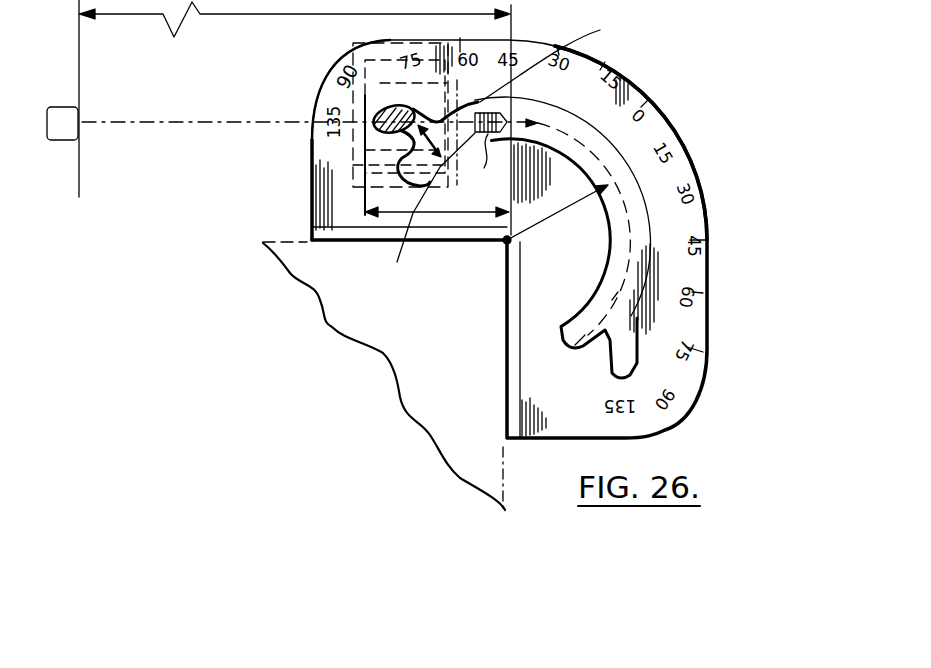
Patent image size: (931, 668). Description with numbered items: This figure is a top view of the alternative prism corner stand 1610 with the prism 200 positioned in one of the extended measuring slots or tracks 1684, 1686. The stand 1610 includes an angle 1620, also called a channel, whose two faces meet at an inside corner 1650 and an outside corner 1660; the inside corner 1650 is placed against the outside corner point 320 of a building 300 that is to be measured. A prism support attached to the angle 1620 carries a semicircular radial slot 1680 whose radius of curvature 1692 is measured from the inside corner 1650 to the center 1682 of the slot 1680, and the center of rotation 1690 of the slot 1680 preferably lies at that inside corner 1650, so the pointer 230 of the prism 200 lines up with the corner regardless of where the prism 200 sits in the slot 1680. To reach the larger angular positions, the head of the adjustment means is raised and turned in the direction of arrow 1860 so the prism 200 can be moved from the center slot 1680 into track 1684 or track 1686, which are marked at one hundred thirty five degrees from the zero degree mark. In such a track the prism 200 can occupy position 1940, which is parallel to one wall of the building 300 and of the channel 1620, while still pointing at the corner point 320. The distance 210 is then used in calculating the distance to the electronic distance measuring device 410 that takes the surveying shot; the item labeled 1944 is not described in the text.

The alternative prism corner stand 1610 is at (782, 71).
The angle 1620 is at (507, 420).
The inside corner 1650 is at (500, 243).
The outside corner 1660 is at (542, 204).
The semicircular radial slot 1680 is at (636, 232).
The center of slot 1682 is at (623, 203).
The extended measuring slot/track 1684 is at (630, 362).
The extended measuring slot/track 1686 is at (383, 112).
The center of rotation 1690 is at (507, 240).
The radius of curvature 1692 is at (562, 211).
The arrow 1860 is at (572, 61).
The position 1940 is at (312, 122).
The centerline 1944 is at (236, 122).
The electronic distance measuring device 410 is at (68, 137).
The distance 210 is at (421, 210).
The prism 200 is at (362, 45).
The pointer 230 is at (437, 197).
The building 300 is at (398, 401).
The outside corner point 320 is at (415, 337).